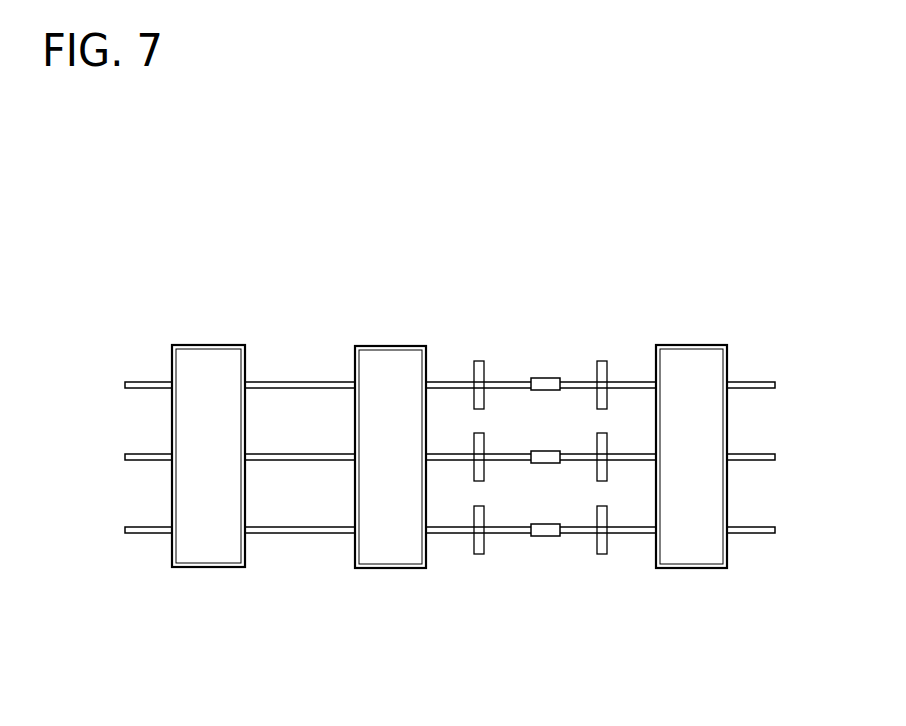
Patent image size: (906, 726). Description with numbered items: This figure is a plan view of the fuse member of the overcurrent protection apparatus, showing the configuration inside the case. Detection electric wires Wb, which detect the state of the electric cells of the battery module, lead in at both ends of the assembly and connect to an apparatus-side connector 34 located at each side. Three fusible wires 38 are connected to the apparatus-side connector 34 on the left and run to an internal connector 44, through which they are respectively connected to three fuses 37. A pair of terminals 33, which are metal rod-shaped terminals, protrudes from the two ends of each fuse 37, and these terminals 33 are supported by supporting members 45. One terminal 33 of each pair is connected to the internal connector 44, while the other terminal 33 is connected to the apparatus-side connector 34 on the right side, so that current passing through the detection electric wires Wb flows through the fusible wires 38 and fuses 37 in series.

The detection electric wire Wb is at (128, 527).
The fusible wire 38 is at (297, 456).
The fuse 37 is at (550, 456).
The terminal 33 is at (443, 456).
The supporting member 45 is at (483, 440).
The internal connector 44 is at (388, 553).
The apparatus-side connector 34 is at (205, 548).